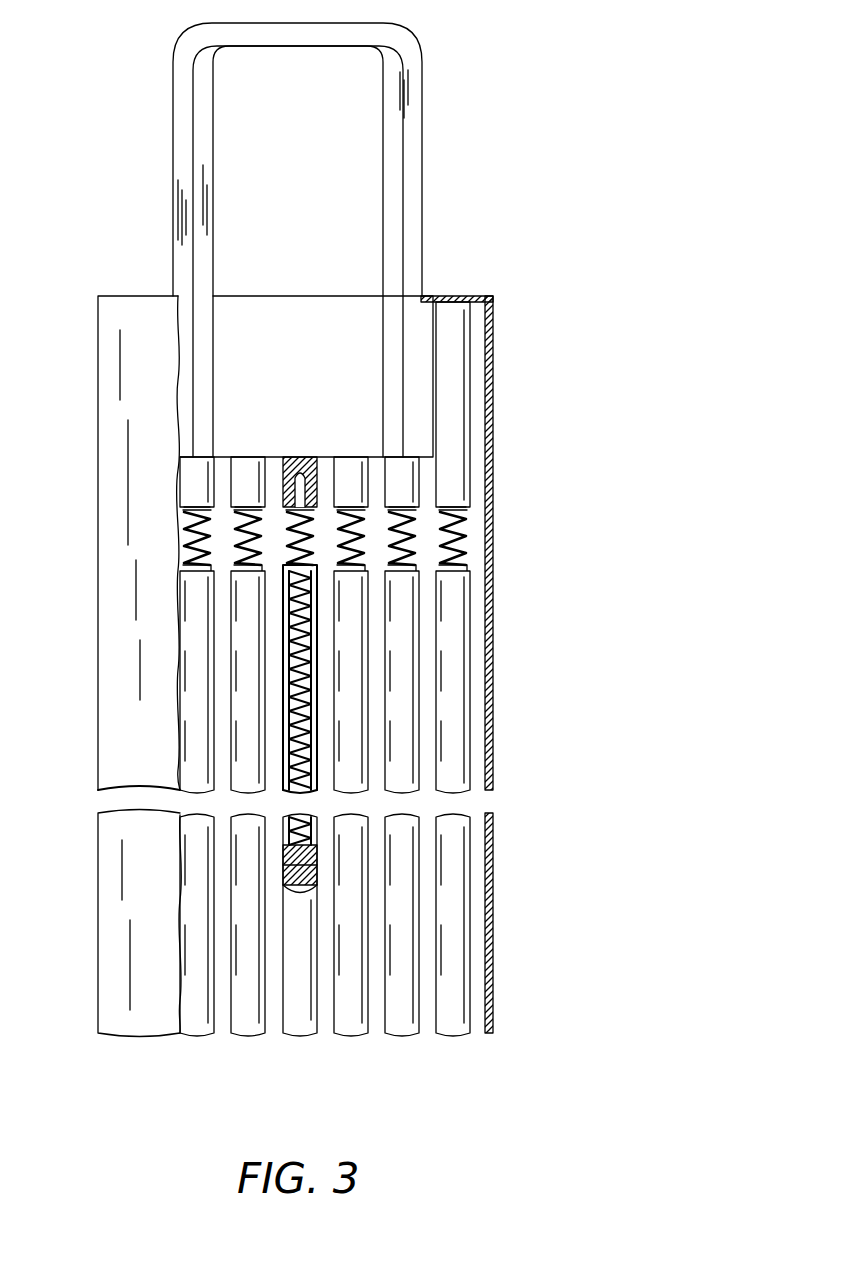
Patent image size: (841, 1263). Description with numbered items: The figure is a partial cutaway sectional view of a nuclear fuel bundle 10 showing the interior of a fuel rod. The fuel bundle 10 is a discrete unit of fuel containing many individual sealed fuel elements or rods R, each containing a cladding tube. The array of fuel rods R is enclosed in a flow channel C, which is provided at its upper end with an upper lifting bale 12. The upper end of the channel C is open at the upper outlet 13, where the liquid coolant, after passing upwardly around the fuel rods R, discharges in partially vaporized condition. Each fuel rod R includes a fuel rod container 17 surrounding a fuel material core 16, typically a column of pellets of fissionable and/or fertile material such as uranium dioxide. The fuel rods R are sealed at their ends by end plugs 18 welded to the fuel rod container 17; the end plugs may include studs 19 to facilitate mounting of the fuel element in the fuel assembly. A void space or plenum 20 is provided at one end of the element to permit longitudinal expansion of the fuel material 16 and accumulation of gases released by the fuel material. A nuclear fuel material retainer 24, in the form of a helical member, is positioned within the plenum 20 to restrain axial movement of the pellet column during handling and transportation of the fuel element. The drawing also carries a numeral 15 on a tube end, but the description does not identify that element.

The nuclear fuel bundle 10 is at (493, 157).
The upper lifting bale 12 is at (420, 57).
The upper outlet 13 is at (290, 296).
The tube cap 15 is at (418, 492).
The fuel material core 16 is at (283, 860).
The fuel rod container 17 is at (287, 723).
The end plug 18 is at (321, 565).
The stud 19 is at (467, 532).
The plenum 20 is at (287, 755).
The nuclear fuel material retainer 24 is at (287, 632).
The fuel rod R is at (237, 673).
The flow channel C is at (490, 590).